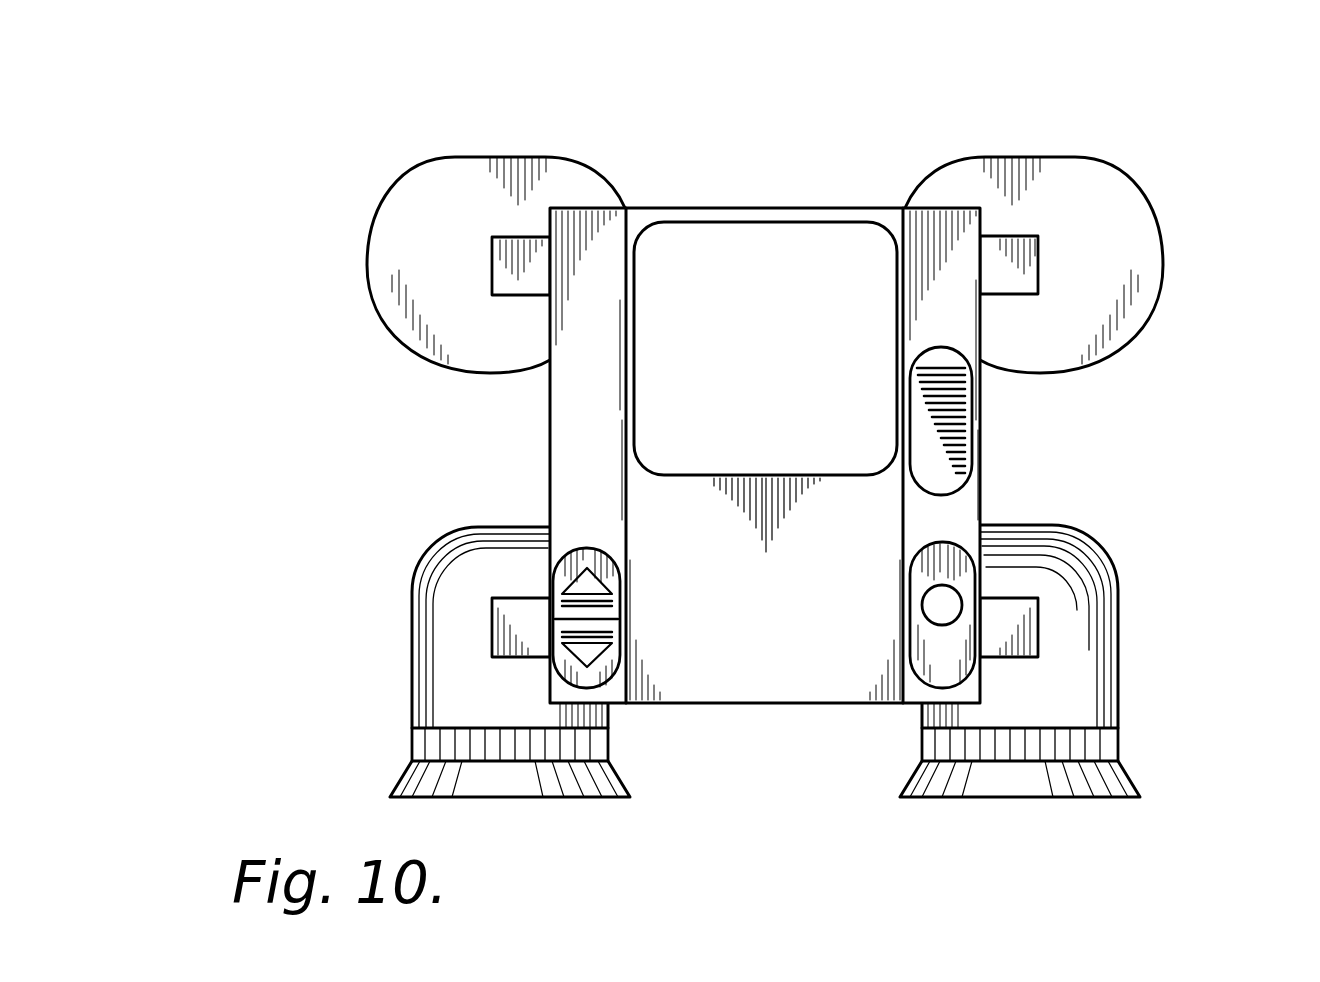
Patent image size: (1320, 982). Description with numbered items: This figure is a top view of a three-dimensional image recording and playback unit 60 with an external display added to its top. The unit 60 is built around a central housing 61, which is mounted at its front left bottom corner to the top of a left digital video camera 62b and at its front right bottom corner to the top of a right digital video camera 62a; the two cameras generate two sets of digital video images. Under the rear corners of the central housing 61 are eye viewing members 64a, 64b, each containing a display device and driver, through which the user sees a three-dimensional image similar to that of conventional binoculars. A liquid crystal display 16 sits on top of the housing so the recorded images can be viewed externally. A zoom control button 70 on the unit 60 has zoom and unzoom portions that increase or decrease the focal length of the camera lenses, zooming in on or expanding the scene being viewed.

The three-dimensional image recording and playback unit 60 is at (1202, 158).
The liquid crystal display 16 is at (750, 228).
The central housing 61 is at (550, 455).
The right digital video camera 62a is at (1154, 288).
The left digital video camera 62b is at (378, 298).
The right eye viewing member 64a is at (1118, 676).
The left eye viewing member 64b is at (412, 680).
The zoom control button 70 is at (970, 408).